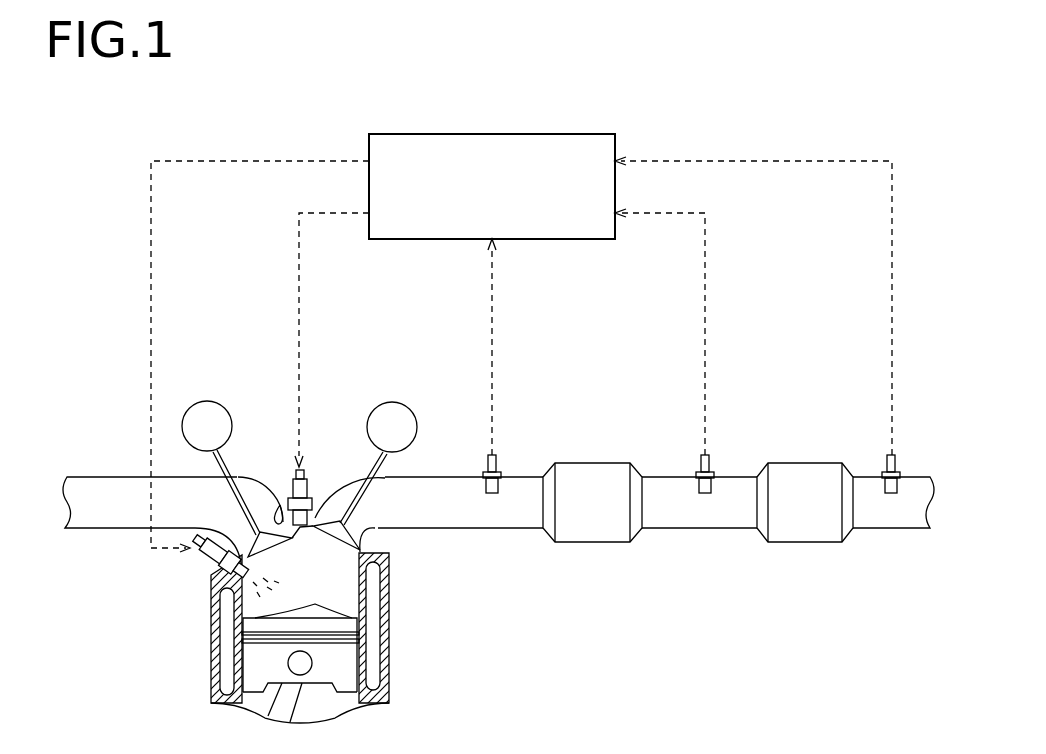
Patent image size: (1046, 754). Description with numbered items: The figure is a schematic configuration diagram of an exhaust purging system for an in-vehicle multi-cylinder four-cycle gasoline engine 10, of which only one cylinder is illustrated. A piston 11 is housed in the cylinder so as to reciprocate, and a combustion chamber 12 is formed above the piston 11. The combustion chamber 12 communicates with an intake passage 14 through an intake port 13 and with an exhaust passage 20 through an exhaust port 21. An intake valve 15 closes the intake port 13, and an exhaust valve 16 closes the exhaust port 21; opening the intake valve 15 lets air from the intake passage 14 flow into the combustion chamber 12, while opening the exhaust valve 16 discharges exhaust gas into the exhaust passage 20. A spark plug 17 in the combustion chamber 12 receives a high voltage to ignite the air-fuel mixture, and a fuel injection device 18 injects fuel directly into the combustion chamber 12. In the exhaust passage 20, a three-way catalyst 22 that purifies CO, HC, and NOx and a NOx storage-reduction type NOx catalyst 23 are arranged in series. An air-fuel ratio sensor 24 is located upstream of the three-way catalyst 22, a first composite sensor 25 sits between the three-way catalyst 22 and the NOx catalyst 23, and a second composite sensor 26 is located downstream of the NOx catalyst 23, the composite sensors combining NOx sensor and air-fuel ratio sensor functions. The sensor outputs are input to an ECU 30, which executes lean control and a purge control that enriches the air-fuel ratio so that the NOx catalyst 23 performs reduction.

The engine 10 is at (510, 657).
The piston 11 is at (255, 663).
The combustion chamber 12 is at (357, 582).
The intake port 13 is at (278, 512).
The intake passage 14 is at (87, 477).
The intake valve 15 is at (228, 458).
The exhaust valve 16 is at (395, 460).
The spark plug 17 is at (308, 490).
The fuel injection device 18 is at (208, 558).
The exhaust passage 20 is at (520, 528).
The exhaust port 21 is at (375, 540).
The three-way catalyst 22 is at (573, 463).
The NOx catalyst 23 is at (787, 462).
The air-fuel ratio sensor 24 is at (497, 462).
The first composite sensor 25 is at (710, 462).
The second composite sensor 26 is at (895, 462).
The ECU 30 is at (588, 134).